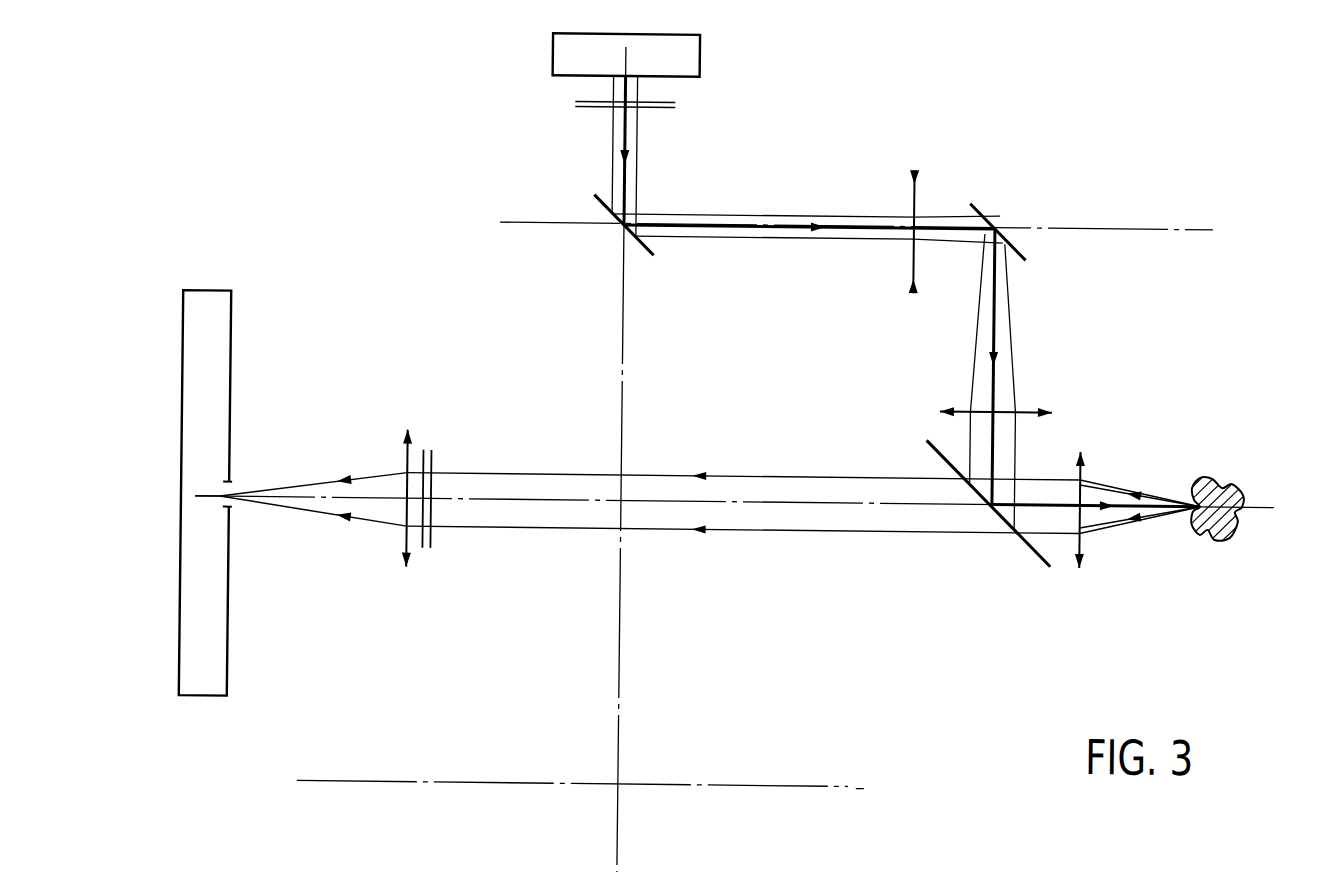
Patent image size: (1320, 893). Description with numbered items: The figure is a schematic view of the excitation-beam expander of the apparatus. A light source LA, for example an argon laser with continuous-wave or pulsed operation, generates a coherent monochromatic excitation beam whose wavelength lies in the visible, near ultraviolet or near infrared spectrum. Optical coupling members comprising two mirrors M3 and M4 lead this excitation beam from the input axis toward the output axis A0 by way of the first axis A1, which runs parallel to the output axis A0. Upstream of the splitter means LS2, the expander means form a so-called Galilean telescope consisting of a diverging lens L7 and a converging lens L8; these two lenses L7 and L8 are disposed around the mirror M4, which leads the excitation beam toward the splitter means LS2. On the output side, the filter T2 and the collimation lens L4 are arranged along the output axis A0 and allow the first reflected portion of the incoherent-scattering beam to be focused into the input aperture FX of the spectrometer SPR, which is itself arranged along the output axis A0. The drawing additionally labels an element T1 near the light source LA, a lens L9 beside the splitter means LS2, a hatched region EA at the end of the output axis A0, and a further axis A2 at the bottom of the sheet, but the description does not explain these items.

The light source LA is at (698, 50).
The first beam-splitting plate T1 is at (668, 108).
The mirror M3 is at (652, 255).
The diverging lens L7 is at (909, 290).
The mirror M4 is at (978, 200).
The converging lens L8 is at (1048, 407).
The splitter means LS2 is at (1033, 538).
The focusing lens L9 is at (1083, 566).
The sample / object under analysis EA is at (1231, 473).
The collimation lens L4 is at (409, 566).
The filter T2 is at (434, 552).
The input aperture FX is at (234, 487).
The spectrometer SPR is at (211, 700).
The output axis A0 is at (752, 494).
The first axis A1 is at (874, 216).
The optical axis A2 is at (599, 772).